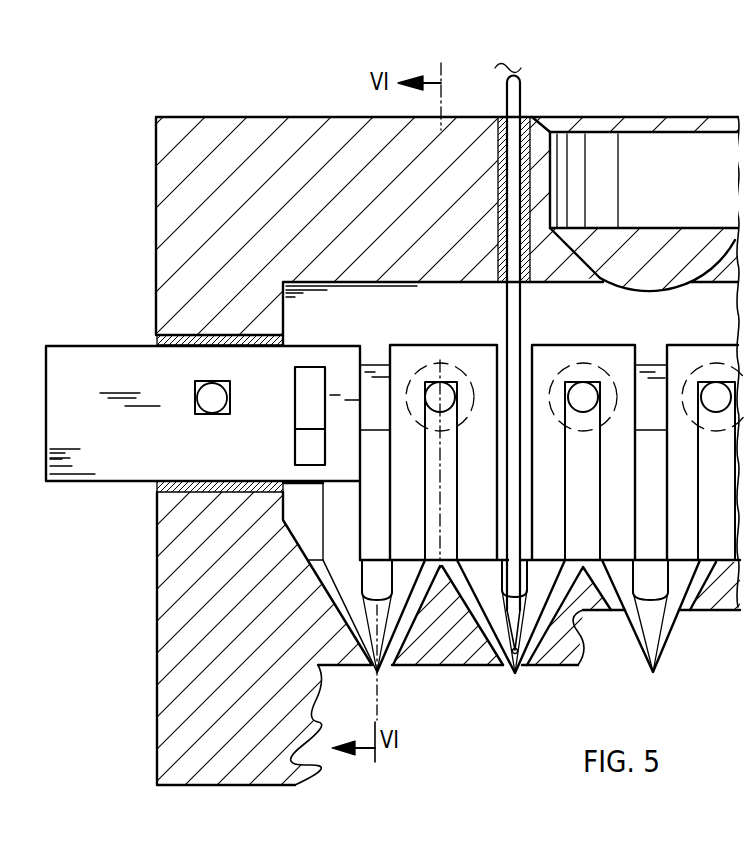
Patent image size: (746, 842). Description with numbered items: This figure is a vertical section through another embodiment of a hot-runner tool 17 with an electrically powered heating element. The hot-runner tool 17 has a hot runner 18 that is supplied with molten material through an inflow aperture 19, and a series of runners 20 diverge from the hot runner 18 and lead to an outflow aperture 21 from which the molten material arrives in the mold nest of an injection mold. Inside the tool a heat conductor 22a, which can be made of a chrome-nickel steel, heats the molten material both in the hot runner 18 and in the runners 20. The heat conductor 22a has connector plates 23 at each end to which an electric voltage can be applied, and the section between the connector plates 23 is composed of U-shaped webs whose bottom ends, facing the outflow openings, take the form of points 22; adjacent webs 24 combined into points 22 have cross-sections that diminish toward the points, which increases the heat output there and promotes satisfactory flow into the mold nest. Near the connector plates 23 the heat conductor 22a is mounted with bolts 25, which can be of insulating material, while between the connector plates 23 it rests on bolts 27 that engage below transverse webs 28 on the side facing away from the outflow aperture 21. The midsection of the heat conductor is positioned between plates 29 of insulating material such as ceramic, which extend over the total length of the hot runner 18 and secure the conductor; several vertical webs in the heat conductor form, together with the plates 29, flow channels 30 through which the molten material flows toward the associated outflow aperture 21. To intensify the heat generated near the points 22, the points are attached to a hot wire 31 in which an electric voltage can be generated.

The hot-runner tool 17 is at (200, 116).
The hot runner 18 is at (718, 332).
The inflow aperture 19 is at (660, 118).
The runners 20 is at (325, 590).
The outflow aperture 21 is at (377, 675).
The points 22 is at (655, 676).
The heat conductor 22a is at (89, 344).
The connector plates 23 is at (100, 445).
The webs 24 is at (358, 614).
The bolts 25 is at (203, 395).
The bolts 27 is at (424, 392).
The transverse webs 28 is at (450, 358).
The plates 29 is at (292, 507).
The flow channels 30 is at (398, 636).
The hot wire 31 is at (507, 97).